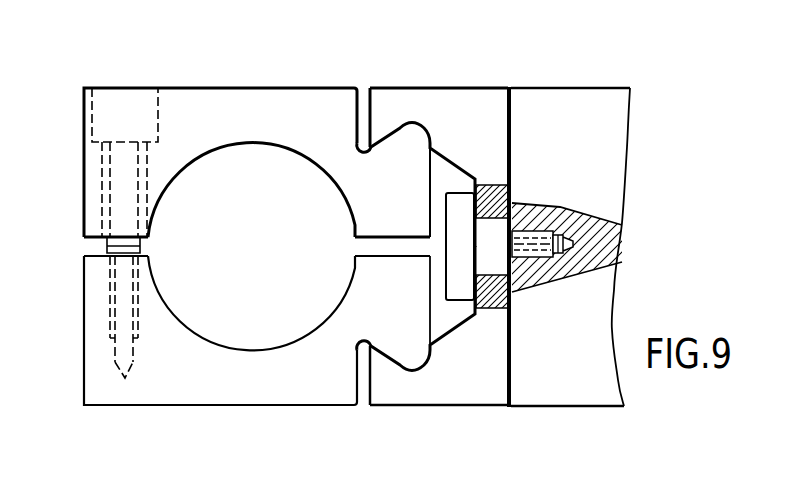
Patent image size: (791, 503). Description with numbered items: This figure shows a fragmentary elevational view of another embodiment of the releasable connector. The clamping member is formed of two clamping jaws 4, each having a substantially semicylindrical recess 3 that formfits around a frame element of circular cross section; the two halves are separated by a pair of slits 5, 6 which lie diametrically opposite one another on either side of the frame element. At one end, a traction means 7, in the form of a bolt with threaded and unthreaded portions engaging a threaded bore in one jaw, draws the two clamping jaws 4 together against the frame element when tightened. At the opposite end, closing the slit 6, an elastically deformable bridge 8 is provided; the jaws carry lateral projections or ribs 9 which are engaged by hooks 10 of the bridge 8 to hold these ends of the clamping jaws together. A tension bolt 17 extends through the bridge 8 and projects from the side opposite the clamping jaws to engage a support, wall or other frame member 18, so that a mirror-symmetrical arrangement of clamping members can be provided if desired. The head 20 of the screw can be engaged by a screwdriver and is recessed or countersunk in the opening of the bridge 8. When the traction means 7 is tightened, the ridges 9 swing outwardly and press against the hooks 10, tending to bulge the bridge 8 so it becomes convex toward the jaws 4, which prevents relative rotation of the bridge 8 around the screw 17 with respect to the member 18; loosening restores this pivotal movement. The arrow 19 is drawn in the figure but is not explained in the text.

The semicylindrical recess 3 is at (265, 125).
The clamping jaws 4 is at (231, 88).
The slit 5 is at (93, 245).
The slit 6 is at (376, 252).
The traction means 7 is at (120, 202).
The bridge 8 is at (493, 185).
The ribs or lateral projections 9 is at (412, 148).
The hooks 10 is at (385, 110).
The tension bolt 17 is at (547, 223).
The member 18 is at (587, 100).
The insertion direction arrow 19 is at (490, 268).
The head 20 is at (455, 217).